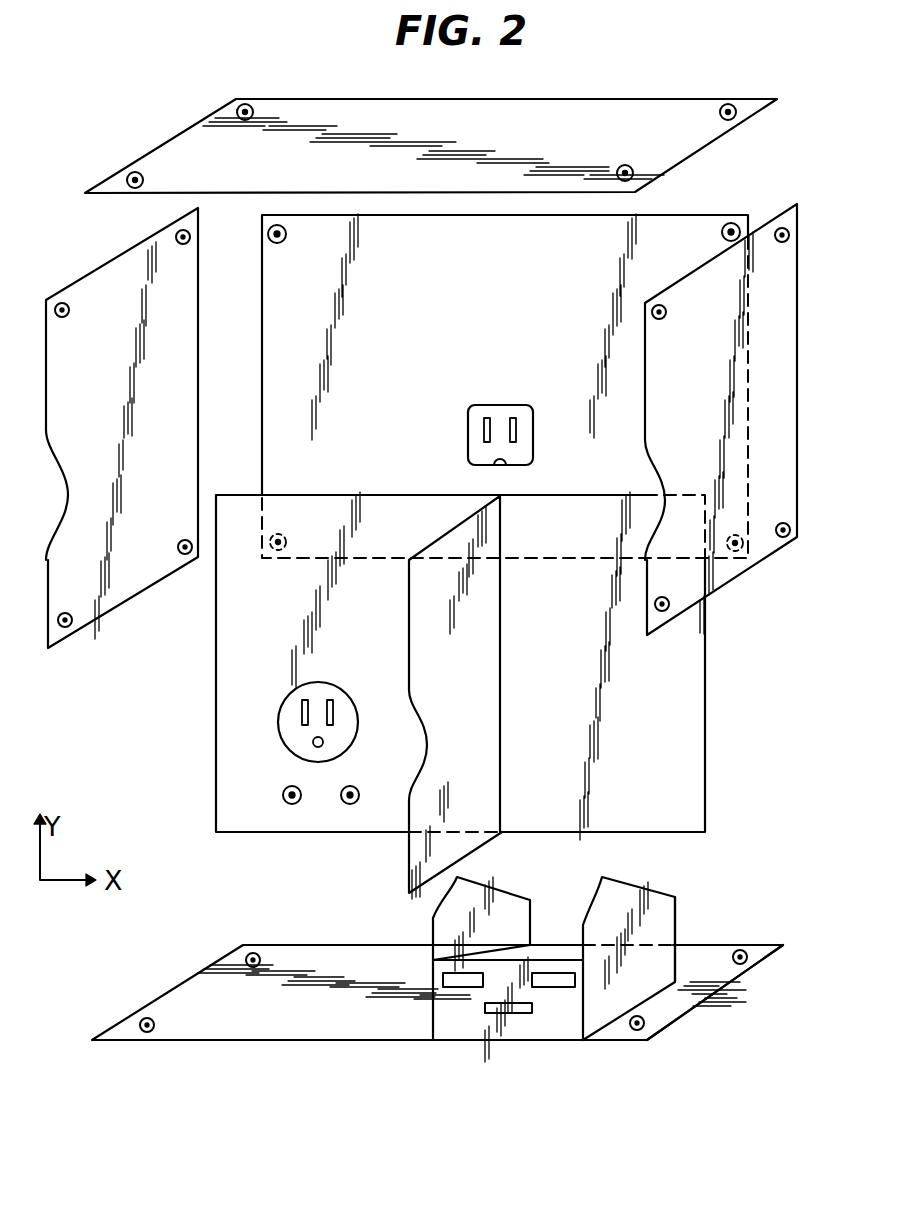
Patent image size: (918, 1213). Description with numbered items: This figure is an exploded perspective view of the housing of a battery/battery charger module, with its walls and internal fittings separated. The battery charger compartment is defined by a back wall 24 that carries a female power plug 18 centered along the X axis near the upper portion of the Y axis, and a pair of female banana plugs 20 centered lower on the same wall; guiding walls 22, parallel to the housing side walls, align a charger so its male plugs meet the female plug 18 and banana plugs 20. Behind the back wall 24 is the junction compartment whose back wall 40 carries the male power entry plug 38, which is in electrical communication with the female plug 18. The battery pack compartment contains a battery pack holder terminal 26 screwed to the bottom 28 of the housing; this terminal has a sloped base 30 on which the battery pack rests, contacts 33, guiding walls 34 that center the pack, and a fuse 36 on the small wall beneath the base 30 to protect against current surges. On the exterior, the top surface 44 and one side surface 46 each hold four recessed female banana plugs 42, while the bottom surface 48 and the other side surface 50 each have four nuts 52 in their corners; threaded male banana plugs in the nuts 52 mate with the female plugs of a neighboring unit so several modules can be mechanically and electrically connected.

The female power plug 18 is at (280, 722).
The female banana plugs 20 is at (292, 805).
The guiding walls 22 is at (406, 865).
The back wall 24 is at (233, 683).
The battery pack holder terminal 26 is at (597, 992).
The bottom 28 is at (634, 1042).
The base 30 is at (545, 935).
The contacts 33 is at (460, 988).
The guiding walls 34 is at (528, 900).
The fuse 36 is at (512, 1013).
The male power entry plug 38 is at (530, 409).
The back wall 40 is at (690, 230).
The female banana plugs 42 is at (237, 112).
The top surface 44 is at (608, 108).
The side surface 46 is at (780, 392).
The bottom surface 48 is at (320, 1012).
The side surface 50 is at (50, 440).
The nuts 52 is at (176, 238).